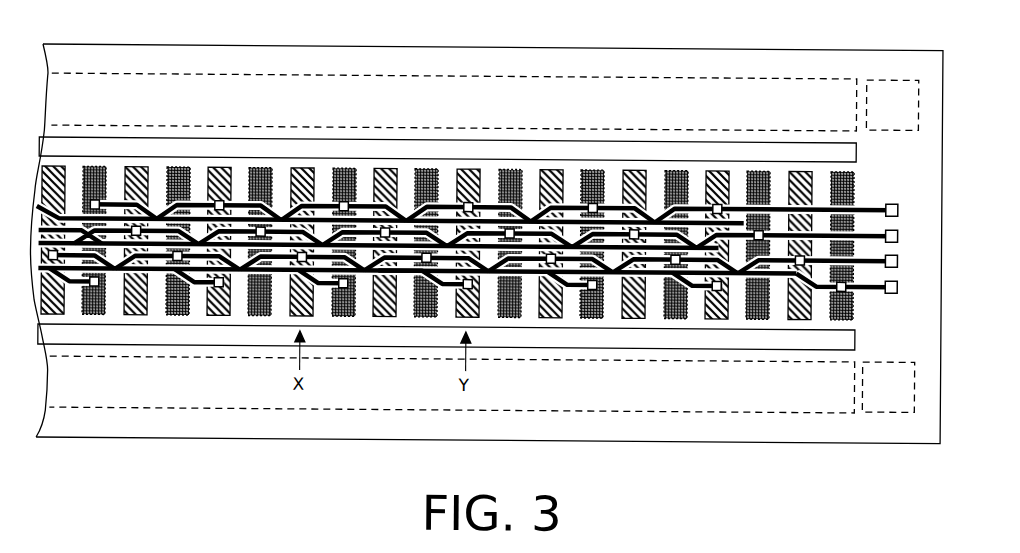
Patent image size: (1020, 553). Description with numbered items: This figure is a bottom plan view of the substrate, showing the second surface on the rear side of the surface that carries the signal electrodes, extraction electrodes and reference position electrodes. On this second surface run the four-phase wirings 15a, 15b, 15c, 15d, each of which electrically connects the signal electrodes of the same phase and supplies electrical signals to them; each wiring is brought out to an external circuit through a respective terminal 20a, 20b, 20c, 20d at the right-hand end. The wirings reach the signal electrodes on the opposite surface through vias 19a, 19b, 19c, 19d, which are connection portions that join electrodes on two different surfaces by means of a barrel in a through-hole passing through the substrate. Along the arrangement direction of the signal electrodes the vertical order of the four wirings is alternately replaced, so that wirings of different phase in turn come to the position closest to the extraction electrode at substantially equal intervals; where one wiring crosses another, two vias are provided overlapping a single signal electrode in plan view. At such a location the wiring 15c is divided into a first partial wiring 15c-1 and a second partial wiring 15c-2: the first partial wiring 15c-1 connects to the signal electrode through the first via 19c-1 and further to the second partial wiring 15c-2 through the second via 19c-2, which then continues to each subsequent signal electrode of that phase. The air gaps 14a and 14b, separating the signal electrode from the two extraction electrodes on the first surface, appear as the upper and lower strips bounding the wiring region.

The air gap 14a is at (788, 344).
The air gap 14b is at (811, 137).
The wiring 15a is at (240, 197).
The wiring 15b is at (113, 200).
The wiring 15c is at (516, 158).
The first partial wiring 15c-1 is at (505, 197).
The second partial wiring 15c-2 is at (408, 270).
The wiring 15d is at (366, 198).
The via 19a is at (216, 185).
The via 19b is at (90, 168).
The via 19c is at (472, 248).
The via 19c-1 is at (468, 221).
The via 19c-2 is at (476, 297).
The via 19d is at (343, 168).
The terminal 20a is at (893, 197).
The terminal 20b is at (912, 223).
The terminal 20c is at (900, 256).
The terminal 20d is at (894, 288).